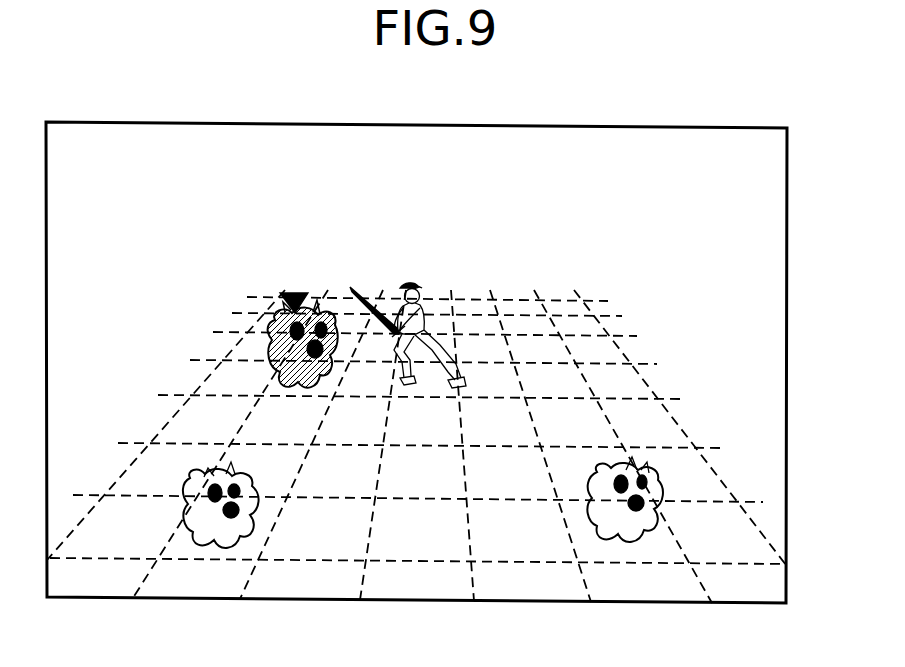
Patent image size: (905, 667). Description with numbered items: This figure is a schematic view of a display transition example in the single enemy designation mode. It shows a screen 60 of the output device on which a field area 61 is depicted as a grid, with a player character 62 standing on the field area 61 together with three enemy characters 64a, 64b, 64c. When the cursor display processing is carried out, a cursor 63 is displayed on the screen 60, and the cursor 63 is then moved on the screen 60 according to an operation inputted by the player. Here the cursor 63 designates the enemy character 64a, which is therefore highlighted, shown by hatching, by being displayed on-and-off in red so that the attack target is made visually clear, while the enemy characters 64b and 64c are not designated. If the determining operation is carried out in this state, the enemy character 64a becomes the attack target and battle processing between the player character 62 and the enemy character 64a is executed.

The screen 60 is at (652, 127).
The field area 61 is at (752, 541).
The player character 62 is at (403, 283).
The cursor 63 is at (296, 290).
The enemy character 64a is at (267, 323).
The enemy character 64b is at (183, 480).
The enemy character 64c is at (650, 475).